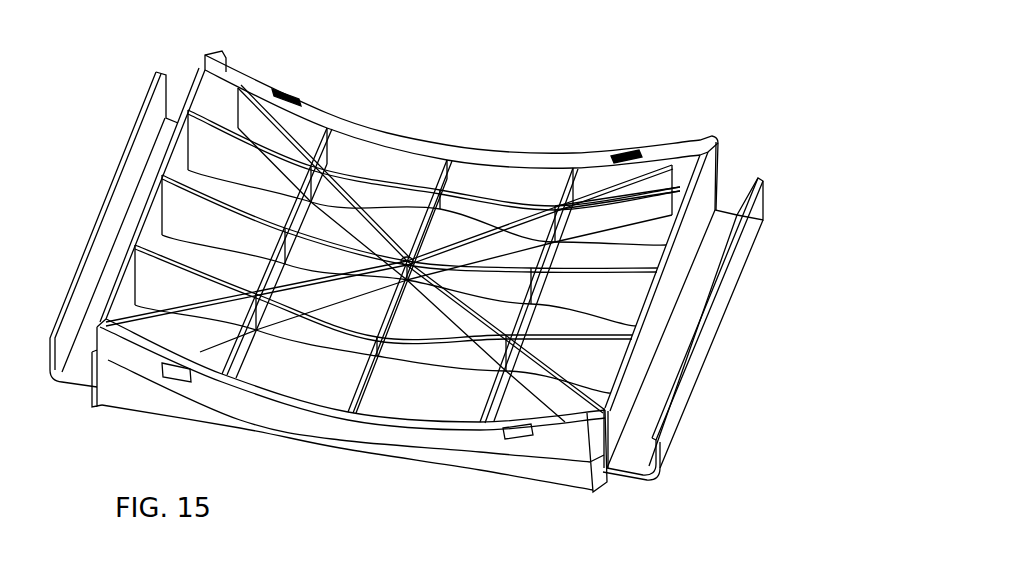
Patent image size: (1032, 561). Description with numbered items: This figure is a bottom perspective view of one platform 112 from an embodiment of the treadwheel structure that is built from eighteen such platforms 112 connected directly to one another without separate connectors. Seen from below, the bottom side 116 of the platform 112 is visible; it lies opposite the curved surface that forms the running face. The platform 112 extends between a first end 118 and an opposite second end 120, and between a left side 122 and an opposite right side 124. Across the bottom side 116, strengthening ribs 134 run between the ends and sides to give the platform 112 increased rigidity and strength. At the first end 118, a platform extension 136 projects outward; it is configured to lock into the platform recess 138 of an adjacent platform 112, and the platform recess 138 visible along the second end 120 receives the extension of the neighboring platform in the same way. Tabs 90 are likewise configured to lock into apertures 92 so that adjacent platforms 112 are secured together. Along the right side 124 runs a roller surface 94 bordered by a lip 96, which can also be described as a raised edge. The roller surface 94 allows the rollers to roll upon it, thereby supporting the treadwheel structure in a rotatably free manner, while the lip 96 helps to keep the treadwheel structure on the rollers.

The platform 112 is at (598, 82).
The second end 120 is at (432, 157).
The platform recess 138 is at (348, 115).
The aperture 92 is at (290, 95).
The left side 122 is at (143, 193).
The right side 124 is at (668, 283).
The roller surface 94 is at (660, 375).
The lip 96 is at (763, 183).
The strengthening rib 134 is at (645, 212).
The bottom side 116 is at (415, 393).
The first end 118 is at (337, 425).
The platform extension 136 is at (562, 477).
The tab 90 is at (178, 372).